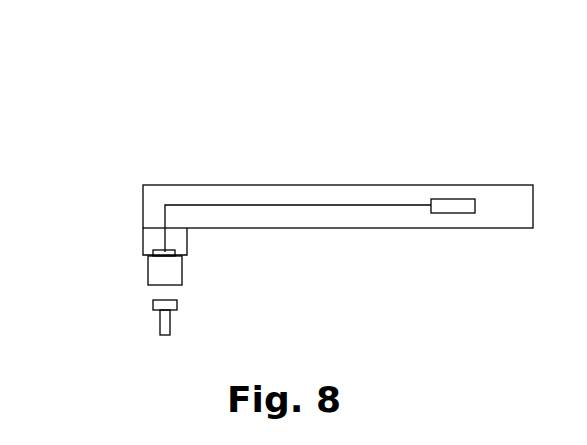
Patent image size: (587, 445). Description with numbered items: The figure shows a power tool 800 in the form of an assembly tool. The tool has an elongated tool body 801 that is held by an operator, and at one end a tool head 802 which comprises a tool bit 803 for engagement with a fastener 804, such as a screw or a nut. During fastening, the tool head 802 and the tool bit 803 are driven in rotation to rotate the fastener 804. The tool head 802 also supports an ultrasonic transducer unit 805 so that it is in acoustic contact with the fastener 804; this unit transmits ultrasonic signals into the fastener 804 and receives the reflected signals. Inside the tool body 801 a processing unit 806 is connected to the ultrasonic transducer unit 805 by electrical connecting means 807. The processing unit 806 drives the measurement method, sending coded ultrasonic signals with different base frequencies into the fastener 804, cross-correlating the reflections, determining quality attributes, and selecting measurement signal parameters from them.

The power tool 800 is at (123, 92).
The tool body 801 is at (258, 184).
The tool head 802 is at (143, 245).
The tool bit 803 is at (162, 283).
The fastener 804 is at (153, 305).
The ultrasonic transducer unit 805 is at (152, 263).
The processing unit 806 is at (453, 199).
The electrical connecting means 807 is at (370, 205).